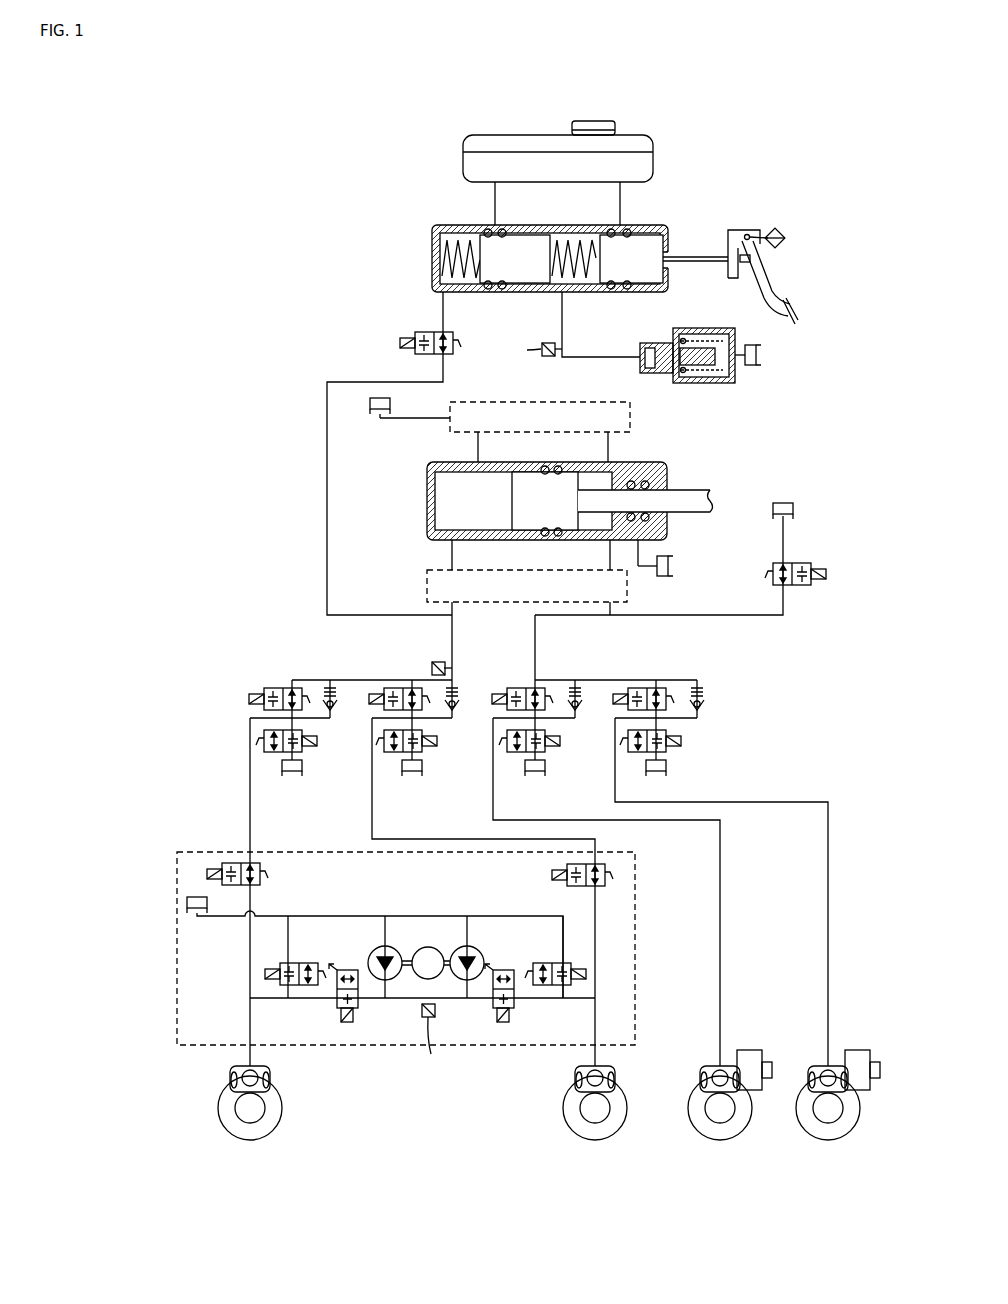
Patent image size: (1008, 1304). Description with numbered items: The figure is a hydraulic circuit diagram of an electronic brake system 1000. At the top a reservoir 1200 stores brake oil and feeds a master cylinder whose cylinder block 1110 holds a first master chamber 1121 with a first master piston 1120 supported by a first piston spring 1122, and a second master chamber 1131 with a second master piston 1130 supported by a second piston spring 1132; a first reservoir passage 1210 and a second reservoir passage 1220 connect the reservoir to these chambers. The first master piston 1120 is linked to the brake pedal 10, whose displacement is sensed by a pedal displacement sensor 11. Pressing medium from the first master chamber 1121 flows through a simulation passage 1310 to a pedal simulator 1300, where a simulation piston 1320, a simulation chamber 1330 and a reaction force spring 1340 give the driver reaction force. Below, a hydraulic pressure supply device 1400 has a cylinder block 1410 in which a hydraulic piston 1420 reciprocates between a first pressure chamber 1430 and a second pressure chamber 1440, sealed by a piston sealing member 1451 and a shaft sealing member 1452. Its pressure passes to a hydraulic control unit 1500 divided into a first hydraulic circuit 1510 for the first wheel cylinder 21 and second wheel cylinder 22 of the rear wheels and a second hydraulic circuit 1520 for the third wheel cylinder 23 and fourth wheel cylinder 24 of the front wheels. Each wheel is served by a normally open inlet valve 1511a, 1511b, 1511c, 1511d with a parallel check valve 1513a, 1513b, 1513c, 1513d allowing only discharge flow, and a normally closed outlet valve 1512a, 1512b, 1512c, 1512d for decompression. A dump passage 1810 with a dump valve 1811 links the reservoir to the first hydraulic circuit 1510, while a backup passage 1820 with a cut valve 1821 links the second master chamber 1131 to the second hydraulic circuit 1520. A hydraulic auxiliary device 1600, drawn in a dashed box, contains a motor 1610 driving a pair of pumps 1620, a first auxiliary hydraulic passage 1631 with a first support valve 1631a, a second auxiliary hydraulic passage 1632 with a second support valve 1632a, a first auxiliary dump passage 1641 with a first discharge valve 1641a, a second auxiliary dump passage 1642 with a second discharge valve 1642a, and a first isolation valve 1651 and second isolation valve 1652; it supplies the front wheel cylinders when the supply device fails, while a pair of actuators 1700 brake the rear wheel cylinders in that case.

The electronic brake system 1000 is at (410, 115).
The reservoir 1200 is at (495, 135).
The cylinder block 1110 is at (432, 239).
The first master piston 1120 is at (650, 276).
The first master chamber 1121 is at (585, 274).
The first piston spring 1122 is at (590, 268).
The second master piston 1130 is at (515, 276).
The second master chamber 1131 is at (462, 280).
The second piston spring 1132 is at (448, 240).
The first reservoir passage 1210 is at (620, 204).
The second reservoir passage 1220 is at (495, 208).
The brake pedal 10 is at (760, 269).
The pedal displacement sensor 11 is at (778, 233).
The pedal simulator 1300 is at (734, 376).
The simulation passage 1310 is at (609, 357).
The simulation piston 1320 is at (657, 373).
The simulation chamber 1330 is at (729, 383).
The reaction force spring 1340 is at (689, 365).
The hydraulic pressure supply device 1400 is at (522, 503).
The cylinder block 1410 is at (427, 494).
The hydraulic piston 1420 is at (522, 530).
The first pressure chamber 1430 is at (438, 514).
The second pressure chamber 1440 is at (592, 523).
The piston sealing member 1451 is at (545, 467).
The shaft sealing member 1452 is at (632, 477).
The hydraulic control unit 1500 is at (427, 584).
The first hydraulic circuit 1510 is at (698, 678).
The second hydraulic circuit 1520 is at (302, 664).
The first inlet valve 1511a is at (646, 688).
The second inlet valve 1511b is at (524, 688).
The third inlet valve 1511c is at (403, 688).
The fourth inlet valve 1511d is at (281, 688).
The first outlet valve 1512a is at (640, 749).
The second outlet valve 1512b is at (518, 749).
The third outlet valve 1512c is at (397, 749).
The fourth outlet valve 1512d is at (275, 749).
The first check valve 1513a is at (697, 716).
The second check valve 1513b is at (573, 716).
The third check valve 1513c is at (452, 716).
The fourth check valve 1513d is at (327, 716).
The hydraulic auxiliary device 1600 is at (435, 949).
The motor 1610 is at (426, 946).
The pumps 1620 is at (382, 946).
The first auxiliary hydraulic passage 1631 is at (538, 999).
The first support valve 1631a is at (505, 1024).
The second auxiliary hydraulic passage 1632 is at (321, 999).
The second support valve 1632a is at (345, 1024).
The first auxiliary dump passage 1641 is at (526, 915).
The first discharge valve 1641a is at (536, 963).
The second auxiliary dump passage 1642 is at (288, 941).
The second discharge valve 1642a is at (310, 963).
The first isolation valve 1651 is at (633, 871).
The second isolation valve 1652 is at (268, 868).
The actuators 1700 is at (746, 1050).
The dump passage 1810 is at (694, 615).
The dump valve 1811 is at (826, 574).
The backup passage 1820 is at (343, 382).
The cut valve 1821 is at (415, 333).
The first wheel cylinder 21 is at (823, 1067).
The second wheel cylinder 22 is at (716, 1067).
The third wheel cylinder 23 is at (630, 1099).
The fourth wheel cylinder 24 is at (280, 1099).